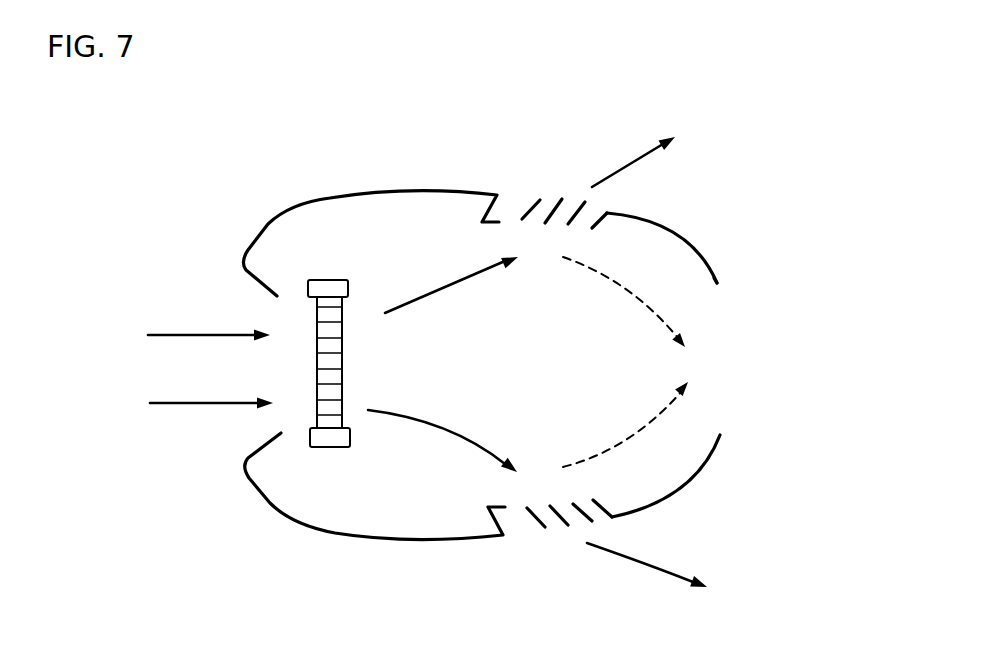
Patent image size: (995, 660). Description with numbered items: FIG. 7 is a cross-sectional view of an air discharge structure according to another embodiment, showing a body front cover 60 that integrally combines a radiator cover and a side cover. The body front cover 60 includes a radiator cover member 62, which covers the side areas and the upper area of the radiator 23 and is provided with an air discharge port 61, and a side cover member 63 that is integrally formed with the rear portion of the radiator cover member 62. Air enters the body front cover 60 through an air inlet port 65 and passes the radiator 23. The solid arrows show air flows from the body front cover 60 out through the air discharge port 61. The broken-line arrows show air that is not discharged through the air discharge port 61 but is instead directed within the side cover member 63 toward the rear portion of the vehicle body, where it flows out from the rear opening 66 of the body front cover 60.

The body front cover 60 is at (321, 358).
The air inlet port 65 is at (273, 297).
The radiator 23 is at (327, 280).
The radiator cover member 62 is at (417, 192).
The air discharge port 61 is at (558, 197).
The side cover member 63 is at (680, 243).
The rear opening 66 is at (718, 282).